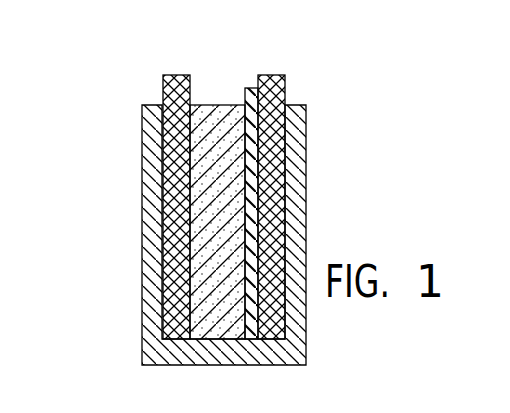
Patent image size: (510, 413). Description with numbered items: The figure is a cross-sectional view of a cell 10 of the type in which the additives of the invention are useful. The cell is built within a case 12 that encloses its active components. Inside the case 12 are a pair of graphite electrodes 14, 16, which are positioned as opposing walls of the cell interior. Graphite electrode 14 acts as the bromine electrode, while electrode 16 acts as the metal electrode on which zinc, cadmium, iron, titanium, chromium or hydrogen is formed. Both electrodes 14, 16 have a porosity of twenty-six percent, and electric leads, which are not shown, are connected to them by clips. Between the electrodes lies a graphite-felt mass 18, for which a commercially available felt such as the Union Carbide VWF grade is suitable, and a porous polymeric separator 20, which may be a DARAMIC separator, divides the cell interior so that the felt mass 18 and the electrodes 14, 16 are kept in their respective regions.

The cell 10 is at (100, 210).
The case 12 is at (148, 157).
The graphite electrode 14 is at (176, 80).
The graphite electrode 16 is at (272, 92).
The graphite-felt mass 18 is at (210, 103).
The porous polymeric separator 20 is at (249, 88).